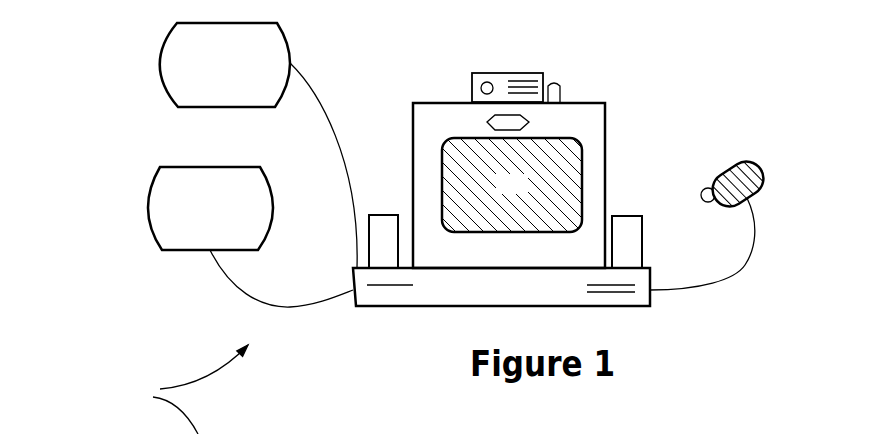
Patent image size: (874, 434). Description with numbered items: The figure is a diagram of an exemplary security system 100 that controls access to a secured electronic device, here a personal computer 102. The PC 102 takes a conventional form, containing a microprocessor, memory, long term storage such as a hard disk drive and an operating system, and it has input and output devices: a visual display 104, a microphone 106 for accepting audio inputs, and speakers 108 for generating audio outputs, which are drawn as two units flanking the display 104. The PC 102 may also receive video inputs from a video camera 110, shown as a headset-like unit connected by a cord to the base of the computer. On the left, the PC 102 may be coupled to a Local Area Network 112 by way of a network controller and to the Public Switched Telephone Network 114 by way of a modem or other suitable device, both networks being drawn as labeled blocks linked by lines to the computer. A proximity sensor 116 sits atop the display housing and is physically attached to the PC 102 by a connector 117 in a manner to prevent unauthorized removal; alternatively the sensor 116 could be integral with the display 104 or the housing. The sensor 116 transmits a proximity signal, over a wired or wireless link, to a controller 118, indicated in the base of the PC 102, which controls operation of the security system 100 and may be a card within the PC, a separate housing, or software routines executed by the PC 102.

The security system 100 is at (185, 389).
The personal computer 102 is at (665, 108).
The visual display 104 is at (507, 185).
The microphone 106 is at (522, 130).
The speakers 108 is at (397, 213).
The video camera 110 is at (760, 188).
The Local Area Network 112 is at (185, 107).
The Public Switched Telephone Network 114 is at (177, 250).
The proximity sensor 116 is at (487, 72).
The connector 117 is at (562, 88).
The controller 118 is at (383, 287).